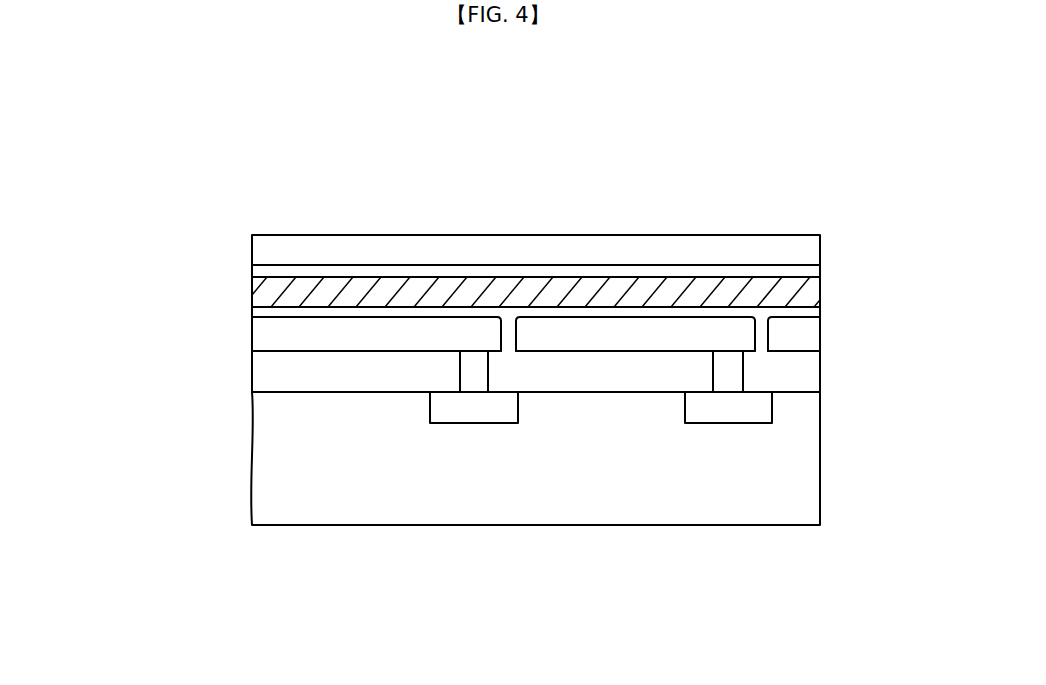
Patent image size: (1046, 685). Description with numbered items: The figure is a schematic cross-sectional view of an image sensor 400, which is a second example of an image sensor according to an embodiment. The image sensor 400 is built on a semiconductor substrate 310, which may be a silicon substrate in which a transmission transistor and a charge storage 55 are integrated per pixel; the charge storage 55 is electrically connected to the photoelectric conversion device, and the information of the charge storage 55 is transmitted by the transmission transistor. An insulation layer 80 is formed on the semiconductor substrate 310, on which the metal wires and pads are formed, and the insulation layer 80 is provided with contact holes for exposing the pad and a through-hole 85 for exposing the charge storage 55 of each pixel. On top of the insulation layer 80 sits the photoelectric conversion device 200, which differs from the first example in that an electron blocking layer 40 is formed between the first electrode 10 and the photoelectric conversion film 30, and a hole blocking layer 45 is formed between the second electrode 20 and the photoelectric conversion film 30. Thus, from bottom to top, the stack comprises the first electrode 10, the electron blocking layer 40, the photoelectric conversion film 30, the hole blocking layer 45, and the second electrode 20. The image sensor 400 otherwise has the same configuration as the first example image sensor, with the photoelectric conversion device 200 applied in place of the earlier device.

The image sensor 400 is at (500, 337).
The photoelectric conversion device 200 is at (471, 294).
The second electrode 20 is at (270, 250).
The hole blocking layer 45 is at (270, 271).
The photoelectric conversion film 30 is at (270, 292).
The electron blocking layer 40 is at (270, 315).
The first electrode 10 is at (495, 348).
The insulation layer 80 is at (805, 372).
The through-hole 85 is at (713, 377).
The charge storage 55 is at (475, 408).
The semiconductor substrate 310 is at (803, 478).